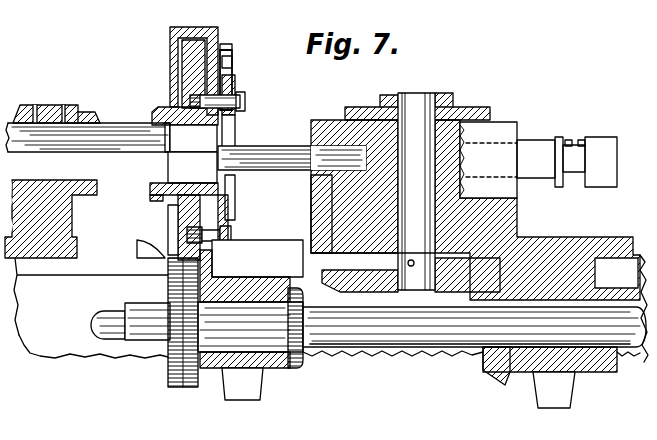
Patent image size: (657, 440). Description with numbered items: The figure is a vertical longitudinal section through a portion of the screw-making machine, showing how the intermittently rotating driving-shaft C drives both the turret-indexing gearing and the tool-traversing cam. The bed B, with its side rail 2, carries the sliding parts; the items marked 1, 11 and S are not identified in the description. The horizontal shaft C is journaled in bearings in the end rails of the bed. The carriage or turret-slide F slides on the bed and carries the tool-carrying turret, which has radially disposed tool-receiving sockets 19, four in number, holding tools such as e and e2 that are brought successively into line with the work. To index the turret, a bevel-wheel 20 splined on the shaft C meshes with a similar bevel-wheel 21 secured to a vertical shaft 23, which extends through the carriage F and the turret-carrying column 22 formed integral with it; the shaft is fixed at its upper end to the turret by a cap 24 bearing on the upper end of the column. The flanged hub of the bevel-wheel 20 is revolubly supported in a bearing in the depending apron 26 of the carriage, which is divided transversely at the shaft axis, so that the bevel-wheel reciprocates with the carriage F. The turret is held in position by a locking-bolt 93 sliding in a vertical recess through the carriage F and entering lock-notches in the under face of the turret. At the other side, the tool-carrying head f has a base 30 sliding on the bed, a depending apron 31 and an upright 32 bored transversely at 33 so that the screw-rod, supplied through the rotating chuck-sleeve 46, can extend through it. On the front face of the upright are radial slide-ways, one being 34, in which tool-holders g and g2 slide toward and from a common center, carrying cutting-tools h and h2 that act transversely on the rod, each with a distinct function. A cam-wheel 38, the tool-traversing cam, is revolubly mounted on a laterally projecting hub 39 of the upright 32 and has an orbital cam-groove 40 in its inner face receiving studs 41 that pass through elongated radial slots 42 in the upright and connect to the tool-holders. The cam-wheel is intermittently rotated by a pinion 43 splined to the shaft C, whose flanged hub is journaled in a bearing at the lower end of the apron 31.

The frame 1 is at (22, 207).
The side rail 2 is at (40, 342).
The bearing block 11 is at (193, 138).
The tool-receiving sockets 19 is at (380, 154).
The bevel-wheel 20 is at (490, 372).
The bevel-wheel 21 is at (336, 281).
The turret-carrying column 22 is at (458, 162).
The vertical shaft 23 is at (422, 188).
The cap 24 is at (363, 107).
The apron 26 is at (586, 284).
The base 30 is at (268, 249).
The apron 31 is at (266, 288).
The upright 32 is at (172, 29).
The recess 33 is at (192, 167).
The slide-way 34 is at (224, 50).
The cam-wheel 38 is at (183, 62).
The hub 39 is at (155, 118).
The cam-groove 40 is at (190, 100).
The studs 41 is at (186, 233).
The radial slots 42 is at (229, 60).
The pinion 43 is at (182, 388).
The chuck-sleeve 46 is at (88, 139).
The locking-bolt 93 is at (318, 209).
The spindle S is at (170, 145).
The tool e is at (281, 147).
The tool e2 is at (567, 153).
The tool-carrying head f is at (233, 80).
The tool-carrying slide g is at (237, 81).
The tool-carrying slide g2 is at (229, 257).
The cutting-tool h is at (236, 126).
The cutting-tool h2 is at (235, 202).
The bed B is at (84, 296).
The driving-shaft C is at (385, 345).
The carriage F is at (561, 311).